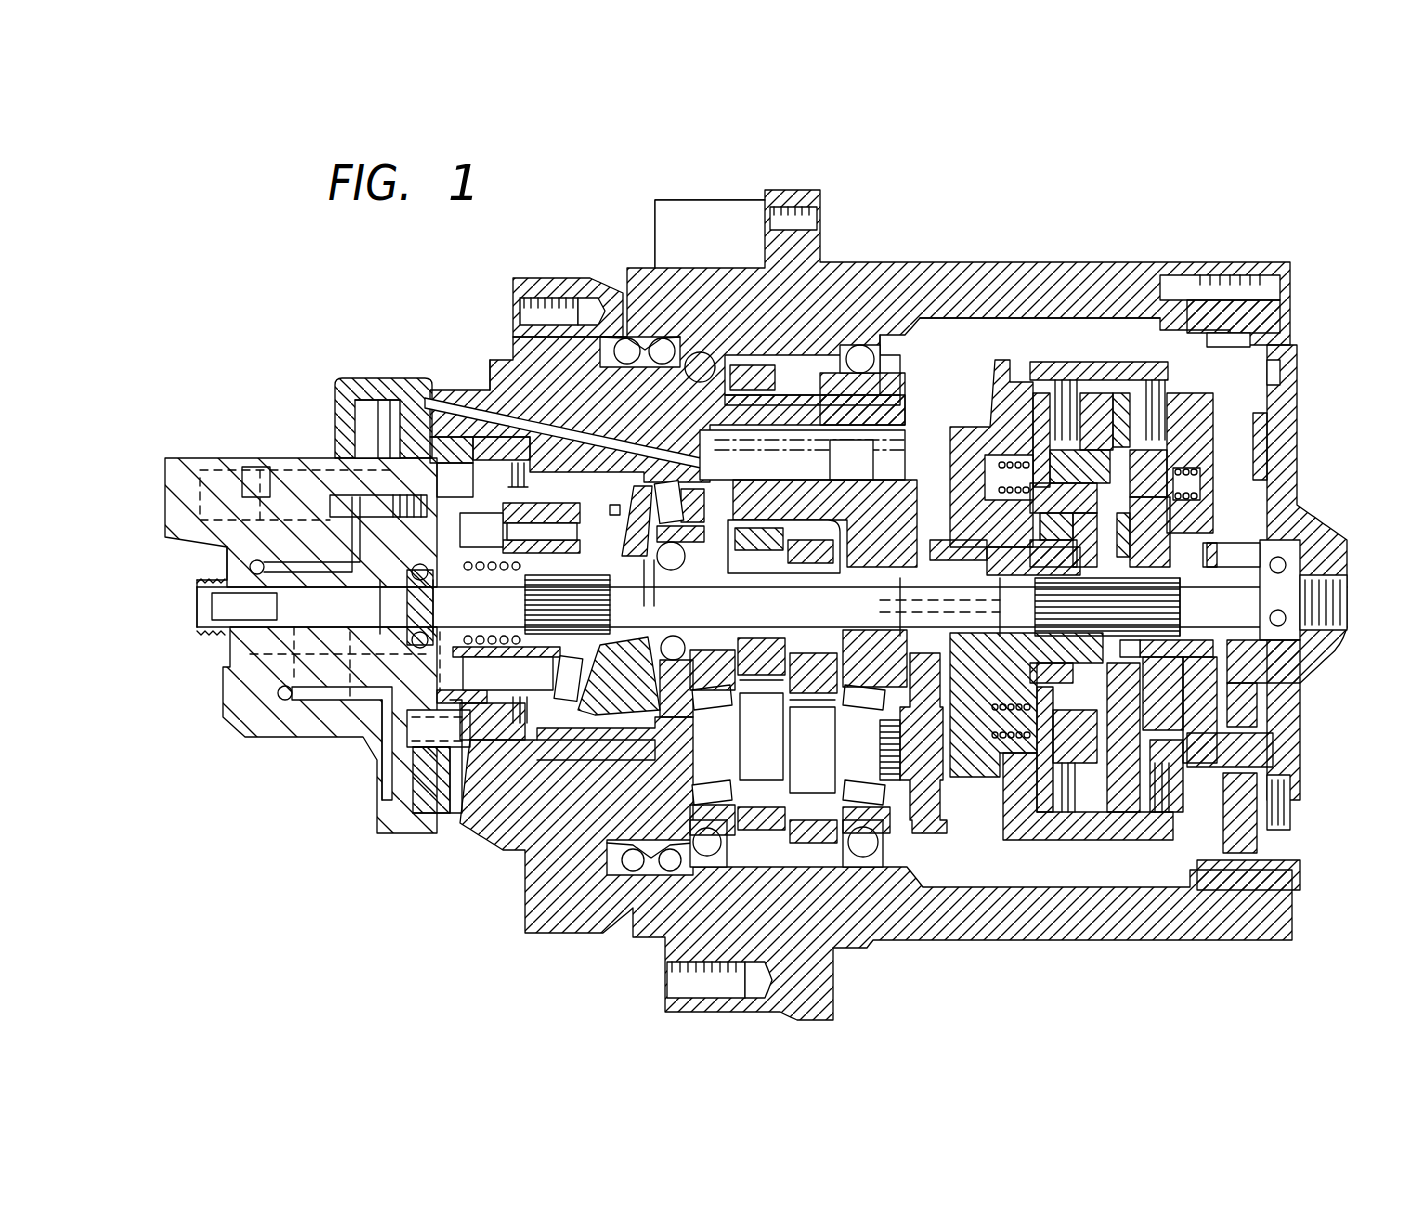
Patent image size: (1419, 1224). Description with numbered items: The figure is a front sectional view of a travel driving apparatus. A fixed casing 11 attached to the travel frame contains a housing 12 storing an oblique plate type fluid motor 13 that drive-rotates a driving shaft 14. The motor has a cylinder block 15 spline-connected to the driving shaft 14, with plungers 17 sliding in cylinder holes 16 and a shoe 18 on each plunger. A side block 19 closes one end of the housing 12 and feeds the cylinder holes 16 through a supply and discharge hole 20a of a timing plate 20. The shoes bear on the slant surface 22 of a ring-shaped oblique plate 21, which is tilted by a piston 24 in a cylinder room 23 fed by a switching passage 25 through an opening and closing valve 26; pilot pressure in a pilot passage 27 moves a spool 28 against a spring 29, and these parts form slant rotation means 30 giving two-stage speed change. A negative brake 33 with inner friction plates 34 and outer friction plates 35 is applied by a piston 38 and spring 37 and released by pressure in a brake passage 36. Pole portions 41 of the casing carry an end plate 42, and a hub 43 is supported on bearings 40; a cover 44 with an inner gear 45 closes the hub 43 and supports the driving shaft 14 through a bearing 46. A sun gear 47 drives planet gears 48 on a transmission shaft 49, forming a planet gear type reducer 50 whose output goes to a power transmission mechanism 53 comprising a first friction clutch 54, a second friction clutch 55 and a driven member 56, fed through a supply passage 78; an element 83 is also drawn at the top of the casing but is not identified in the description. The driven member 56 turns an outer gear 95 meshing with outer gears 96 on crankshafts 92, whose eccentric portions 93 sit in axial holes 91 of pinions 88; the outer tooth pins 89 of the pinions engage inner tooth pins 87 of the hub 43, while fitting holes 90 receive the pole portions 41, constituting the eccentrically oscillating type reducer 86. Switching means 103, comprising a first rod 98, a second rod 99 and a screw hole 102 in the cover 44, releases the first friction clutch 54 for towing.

The fixed casing 11 is at (540, 283).
The housing 12 is at (645, 720).
The oblique plate type fluid motor 13 is at (558, 720).
The driving shaft 14 is at (340, 608).
The cylinder block 15 is at (515, 740).
The cylinder holes 16 is at (520, 695).
The plungers 17 is at (530, 495).
The shoe 18 is at (615, 508).
The side block 19 is at (220, 732).
The timing plate 20 is at (425, 693).
The supply and discharge hole 20a is at (428, 655).
The oblique plate 21 is at (712, 705).
The slant surface 22 is at (575, 740).
The cylinder room 23 is at (742, 466).
The piston 24 is at (650, 445).
The switching passage 25 is at (524, 380).
The opening and closing valve 26 is at (365, 475).
The pilot passage 27 is at (260, 465).
The spool 28 is at (365, 420).
The spring 29 is at (395, 440).
The slant rotation means 30 is at (350, 410).
The negative brake 33 is at (430, 775).
The inner friction plates 34 is at (485, 430).
The outer friction plates 35 is at (512, 460).
The brake passage 36 is at (390, 795).
The spring 37 is at (425, 715).
The piston 38 is at (452, 775).
The bearings 40 is at (855, 858).
The pole portions 41 is at (717, 365).
The end plate 42 is at (905, 380).
The hub 43 is at (1060, 265).
The cover 44 is at (1290, 440).
The inner gear 45 is at (1233, 348).
The bearing 46 is at (1310, 540).
The sun gear 47 is at (1230, 550).
The planet gears 48 is at (1250, 700).
The transmission shaft 49 is at (1280, 755).
The planet gear type reducer 50 is at (1267, 790).
The power transmission mechanism 53 is at (1062, 355).
The first friction clutch 54 is at (1040, 440).
The second friction clutch 55 is at (1180, 385).
The driven member 56 is at (1000, 385).
The supply passage 78 is at (590, 415).
The plug 83 is at (655, 262).
The eccentrically oscillating type reducer 86 is at (905, 370).
The inner tooth pins 87 is at (808, 355).
The pinions 88 is at (783, 538).
The outer tooth pins 89 is at (752, 365).
The fitting holes 90 is at (850, 480).
The axial hole 91 is at (770, 690).
The crankshafts 92 is at (900, 875).
The eccentric portions 93 is at (757, 860).
The outer gear 95 is at (935, 540).
The outer gear 96 is at (1008, 835).
The first rod 98 is at (990, 793).
The second rod 99 is at (1260, 672).
The screw hole 102 is at (1350, 575).
The switching means 103 is at (1085, 825).